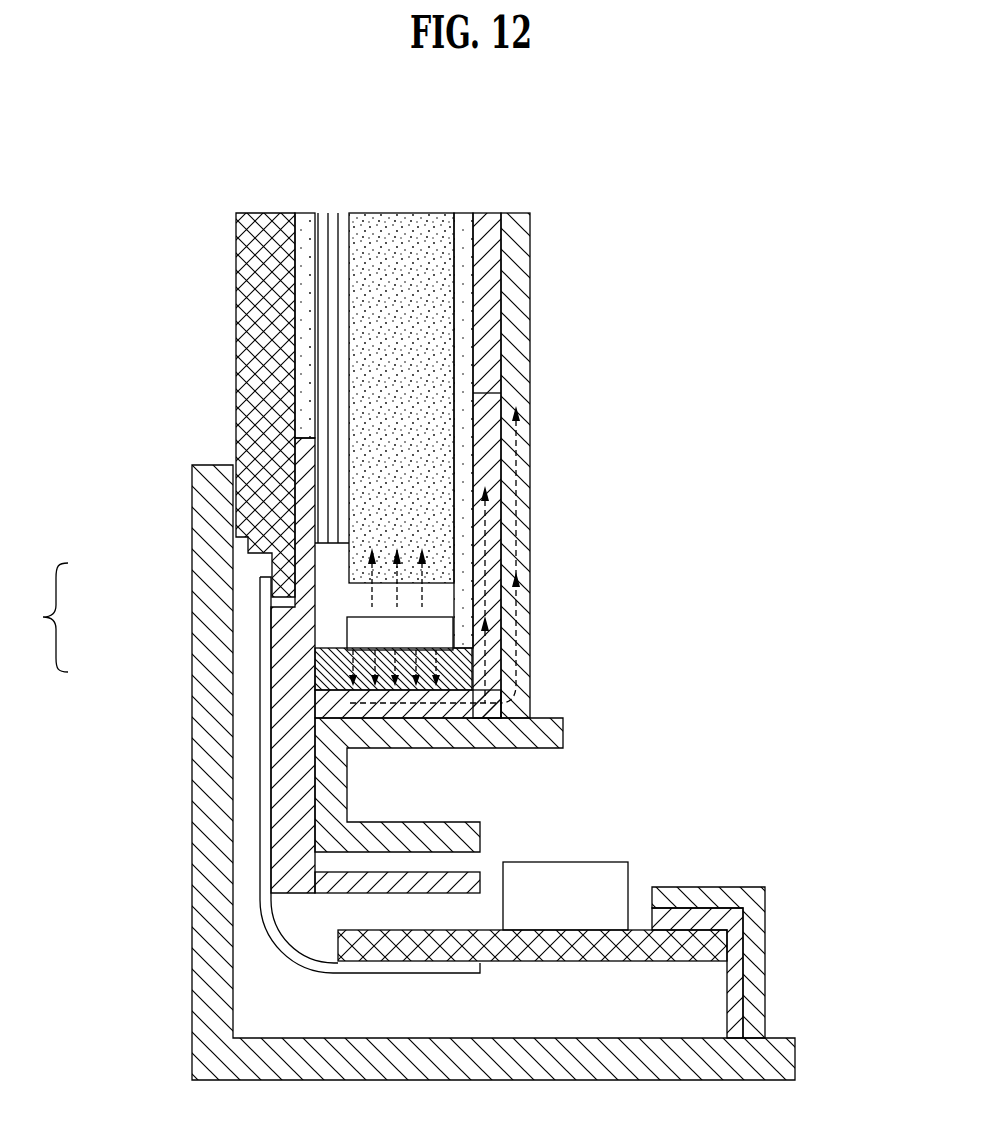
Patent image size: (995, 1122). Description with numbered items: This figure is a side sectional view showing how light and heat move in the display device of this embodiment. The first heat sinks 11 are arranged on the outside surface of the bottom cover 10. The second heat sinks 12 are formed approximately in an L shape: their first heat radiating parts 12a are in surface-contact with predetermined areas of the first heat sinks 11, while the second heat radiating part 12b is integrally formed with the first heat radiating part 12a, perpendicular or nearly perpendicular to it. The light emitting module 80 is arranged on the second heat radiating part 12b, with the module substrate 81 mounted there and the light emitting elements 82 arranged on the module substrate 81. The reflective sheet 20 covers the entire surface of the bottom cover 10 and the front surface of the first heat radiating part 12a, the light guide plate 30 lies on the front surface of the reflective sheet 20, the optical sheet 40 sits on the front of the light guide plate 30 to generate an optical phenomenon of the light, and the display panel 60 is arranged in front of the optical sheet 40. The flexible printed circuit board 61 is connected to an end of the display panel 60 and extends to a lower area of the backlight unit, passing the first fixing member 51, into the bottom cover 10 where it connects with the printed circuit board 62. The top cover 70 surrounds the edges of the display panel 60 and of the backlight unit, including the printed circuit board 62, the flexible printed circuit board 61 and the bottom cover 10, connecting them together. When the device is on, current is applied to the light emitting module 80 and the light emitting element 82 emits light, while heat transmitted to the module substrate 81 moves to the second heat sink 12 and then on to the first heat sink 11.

The bottom cover 10 is at (490, 230).
The first heat sink 11 is at (512, 543).
The second heat sink 12 is at (712, 620).
The first heat radiating part 12a is at (488, 597).
The second heat radiating part 12b is at (438, 710).
The reflective sheet 20 is at (463, 278).
The light guide plate 30 is at (408, 350).
The optical sheet 40 is at (333, 308).
The first fixing member 51 is at (300, 812).
The display panel 60 is at (260, 392).
The flexible printed circuit board 61 is at (267, 918).
The printed circuit board 62 is at (613, 950).
The top cover 70 is at (210, 1027).
The light emitting module 80 is at (37, 617).
The module substrate 81 is at (337, 667).
The light emitting element 82 is at (363, 630).